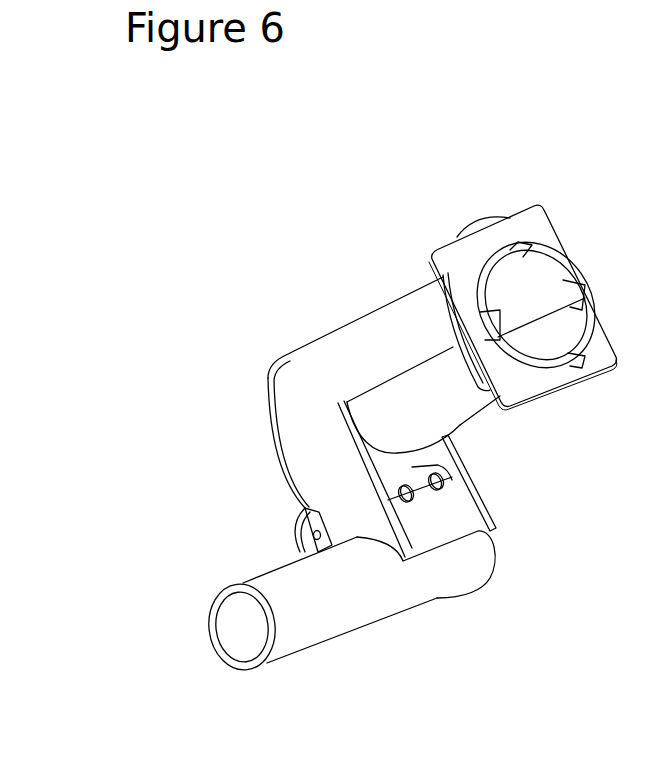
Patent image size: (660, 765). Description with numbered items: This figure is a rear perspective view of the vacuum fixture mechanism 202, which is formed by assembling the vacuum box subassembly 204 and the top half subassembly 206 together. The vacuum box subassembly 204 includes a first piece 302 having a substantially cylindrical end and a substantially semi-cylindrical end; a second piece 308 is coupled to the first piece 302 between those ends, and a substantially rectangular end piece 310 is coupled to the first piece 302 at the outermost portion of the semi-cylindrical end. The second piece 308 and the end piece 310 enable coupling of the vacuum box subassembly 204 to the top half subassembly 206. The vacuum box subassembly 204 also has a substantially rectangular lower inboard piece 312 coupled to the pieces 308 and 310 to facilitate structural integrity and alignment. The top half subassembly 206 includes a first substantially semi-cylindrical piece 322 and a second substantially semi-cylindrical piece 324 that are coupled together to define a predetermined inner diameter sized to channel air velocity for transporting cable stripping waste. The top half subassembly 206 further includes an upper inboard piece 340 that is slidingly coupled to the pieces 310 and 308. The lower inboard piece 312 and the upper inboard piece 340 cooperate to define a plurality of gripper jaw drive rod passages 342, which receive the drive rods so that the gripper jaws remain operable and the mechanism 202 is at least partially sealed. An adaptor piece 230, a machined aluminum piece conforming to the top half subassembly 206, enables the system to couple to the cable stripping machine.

The vacuum fixture mechanism 202 is at (360, 150).
The top half subassembly 206 is at (485, 177).
The adaptor piece 230 is at (540, 226).
The first substantially semi-cylindrical piece 322 is at (355, 320).
The second substantially semi-cylindrical piece 324 is at (463, 412).
The second piece 308 is at (320, 432).
The substantially rectangular end piece 310 is at (460, 452).
The upper inboard piece 340 is at (478, 503).
The gripper jaw drive rod passages 342 is at (425, 502).
The lower inboard piece 312 is at (460, 528).
The first piece 302 is at (360, 593).
The vacuum box subassembly 204 is at (312, 663).